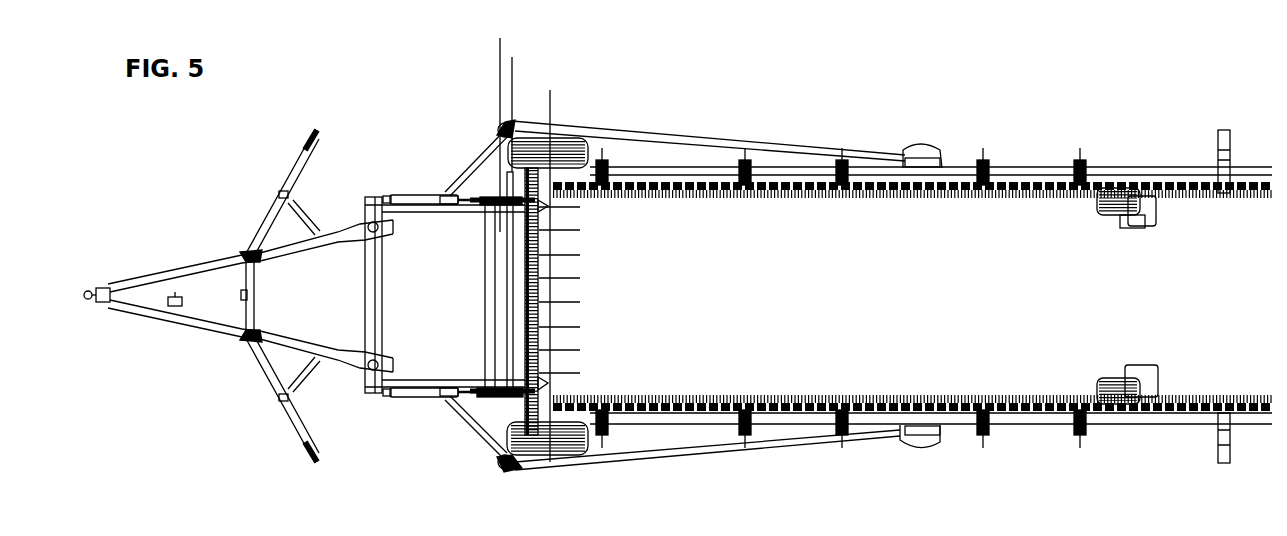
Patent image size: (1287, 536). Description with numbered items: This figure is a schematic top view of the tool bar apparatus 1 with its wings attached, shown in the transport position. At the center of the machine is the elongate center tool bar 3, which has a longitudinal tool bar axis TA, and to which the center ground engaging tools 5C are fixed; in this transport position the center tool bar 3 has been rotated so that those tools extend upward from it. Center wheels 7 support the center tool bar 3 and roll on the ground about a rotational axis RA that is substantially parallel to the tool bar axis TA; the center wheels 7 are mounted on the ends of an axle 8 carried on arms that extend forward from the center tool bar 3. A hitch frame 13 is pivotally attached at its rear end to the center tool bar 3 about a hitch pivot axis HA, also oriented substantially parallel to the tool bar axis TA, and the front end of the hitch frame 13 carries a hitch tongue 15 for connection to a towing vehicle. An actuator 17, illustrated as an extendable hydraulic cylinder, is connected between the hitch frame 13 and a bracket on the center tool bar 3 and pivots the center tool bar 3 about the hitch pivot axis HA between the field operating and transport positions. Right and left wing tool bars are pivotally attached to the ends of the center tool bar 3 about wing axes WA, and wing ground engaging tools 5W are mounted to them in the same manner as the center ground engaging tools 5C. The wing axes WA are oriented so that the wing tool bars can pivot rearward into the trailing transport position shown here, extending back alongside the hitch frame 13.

The tool bar apparatus 1 is at (1033, 123).
The center tool bar 3 is at (533, 243).
The center ground engaging tools 5C is at (518, 398).
The wing ground engaging tools 5W is at (1122, 405).
The center wheels 7 is at (578, 452).
The axle 8 is at (552, 312).
The hitch frame 13 is at (172, 265).
The hitch tongue 15 is at (88, 289).
The actuator 17 is at (412, 196).
The hitch pivot axis HA is at (497, 57).
The tool bar axis TA is at (513, 67).
The rotational axis RA is at (550, 103).
The wing axes WA is at (503, 452).